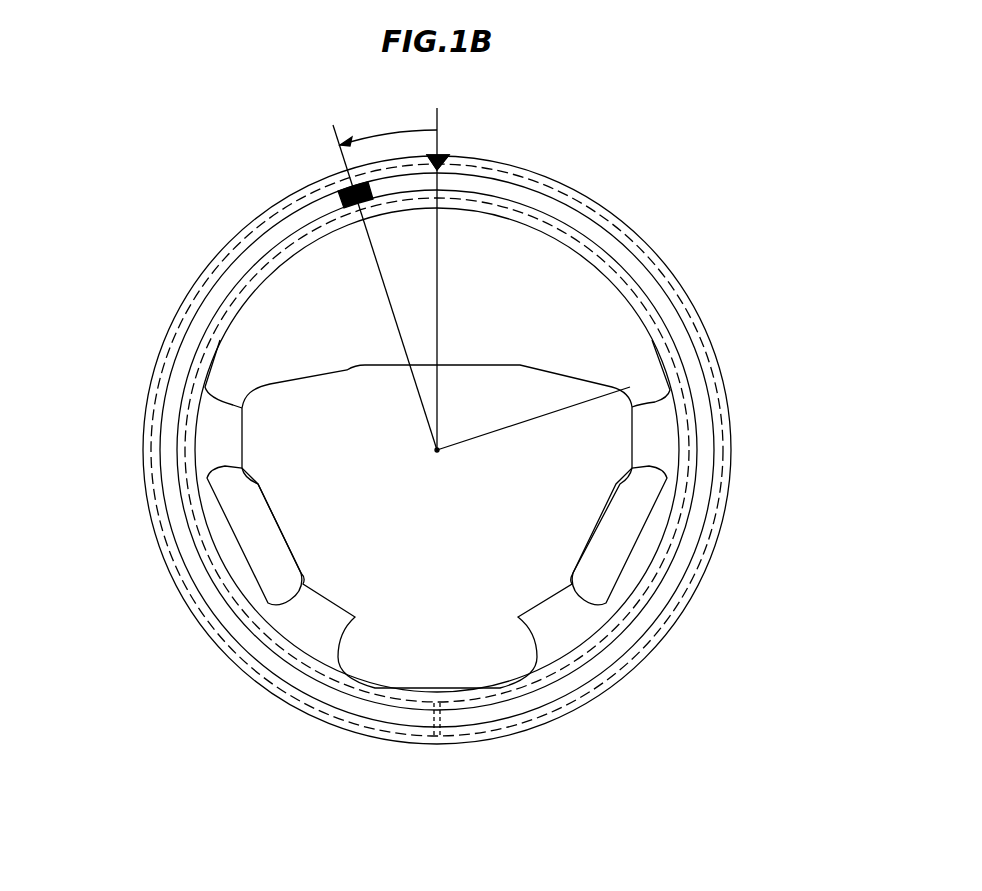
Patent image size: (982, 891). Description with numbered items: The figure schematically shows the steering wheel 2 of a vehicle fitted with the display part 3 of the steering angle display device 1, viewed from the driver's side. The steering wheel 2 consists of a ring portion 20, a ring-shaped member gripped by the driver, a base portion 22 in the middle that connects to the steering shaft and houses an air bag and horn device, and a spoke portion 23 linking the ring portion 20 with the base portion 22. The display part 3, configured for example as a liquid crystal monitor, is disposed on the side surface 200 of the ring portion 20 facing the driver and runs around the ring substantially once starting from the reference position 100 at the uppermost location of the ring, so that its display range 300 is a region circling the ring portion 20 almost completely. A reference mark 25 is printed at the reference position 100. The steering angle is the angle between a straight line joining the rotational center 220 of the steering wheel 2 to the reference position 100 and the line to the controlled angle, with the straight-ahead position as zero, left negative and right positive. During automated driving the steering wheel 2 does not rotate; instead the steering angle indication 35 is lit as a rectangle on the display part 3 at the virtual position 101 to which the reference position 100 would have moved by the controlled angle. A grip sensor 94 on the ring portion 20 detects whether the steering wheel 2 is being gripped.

The steering angle display device 1 is at (735, 127).
The steering wheel 2 is at (609, 205).
The display part 3 is at (638, 255).
The ring portion 20 is at (697, 305).
The base portion 22 is at (567, 523).
The spoke portion 23 is at (652, 435).
The reference mark 25 is at (453, 155).
The steering angle indication 35 is at (342, 190).
The grip sensor 94 is at (683, 598).
The reference position 100 is at (441, 155).
The virtual position 101 is at (348, 172).
The side surface 200 is at (728, 458).
The rotational center 220 is at (610, 392).
The display range 300 is at (653, 285).